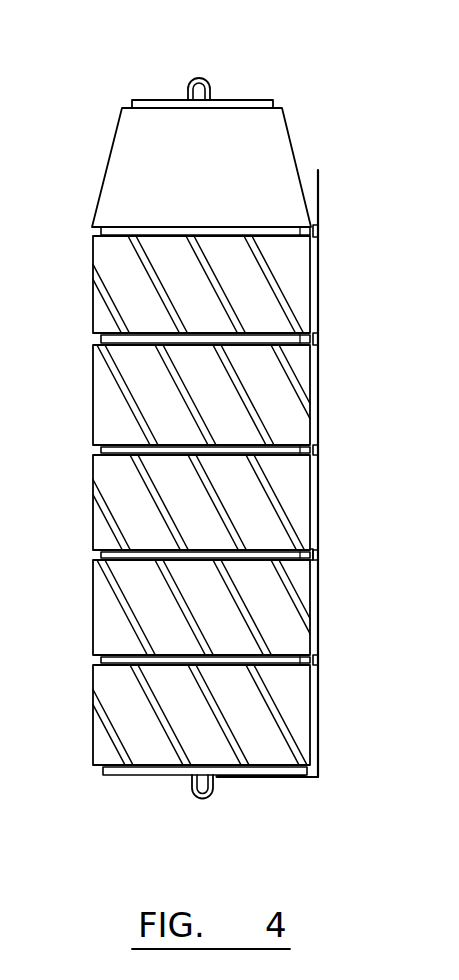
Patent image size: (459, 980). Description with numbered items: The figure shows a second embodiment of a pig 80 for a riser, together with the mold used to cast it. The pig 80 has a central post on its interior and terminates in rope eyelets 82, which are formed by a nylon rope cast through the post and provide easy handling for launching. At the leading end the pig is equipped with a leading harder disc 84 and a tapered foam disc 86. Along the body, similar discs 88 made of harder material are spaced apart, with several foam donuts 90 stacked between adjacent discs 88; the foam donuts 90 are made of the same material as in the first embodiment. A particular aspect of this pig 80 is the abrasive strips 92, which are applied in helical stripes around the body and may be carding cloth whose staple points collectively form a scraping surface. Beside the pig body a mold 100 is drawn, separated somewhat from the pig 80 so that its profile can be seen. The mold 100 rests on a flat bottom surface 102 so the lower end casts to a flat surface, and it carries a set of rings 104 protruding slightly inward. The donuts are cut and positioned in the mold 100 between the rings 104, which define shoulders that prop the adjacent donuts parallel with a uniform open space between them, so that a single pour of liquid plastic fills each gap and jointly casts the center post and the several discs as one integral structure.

The pig 80 is at (145, 795).
The rope eyelets 82 is at (202, 800).
The leading harder disc 84 is at (245, 100).
The tapered foam disc 86 is at (115, 140).
The discs 88 is at (98, 232).
The foam donuts 90 is at (92, 740).
The abrasive strips 92 is at (123, 618).
The mold 100 is at (322, 745).
The flat bottom surface 102 is at (267, 777).
The rings 104 is at (318, 553).